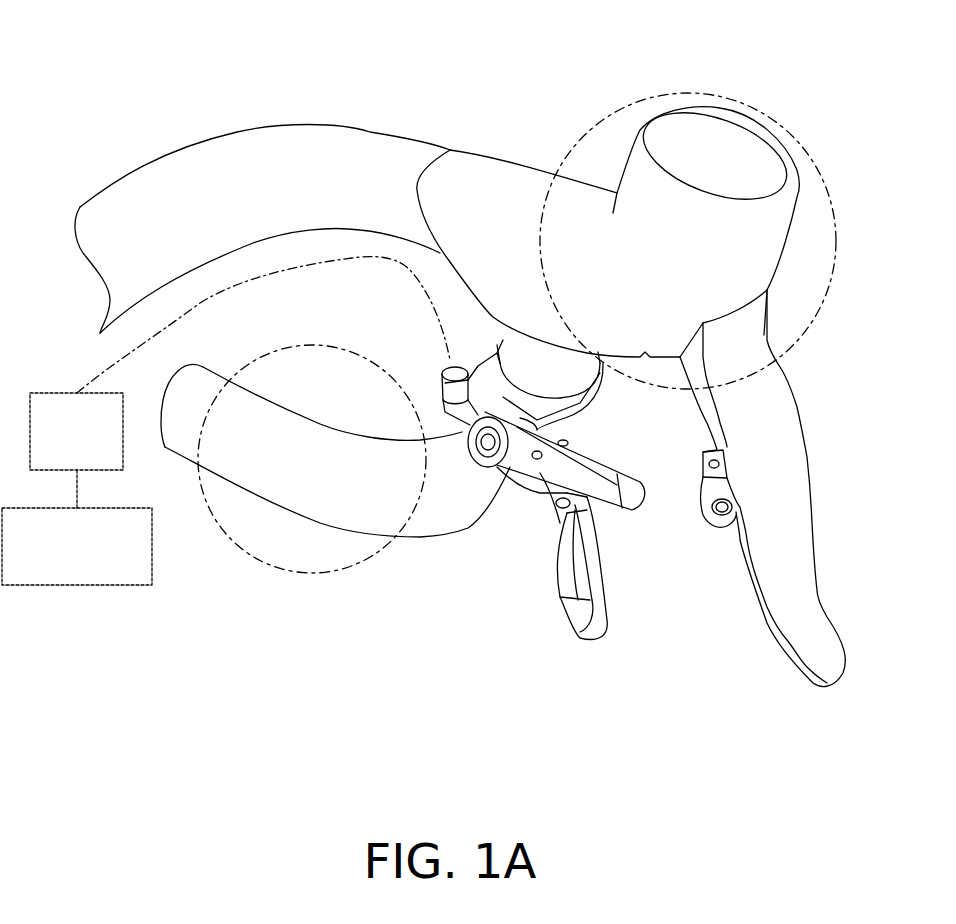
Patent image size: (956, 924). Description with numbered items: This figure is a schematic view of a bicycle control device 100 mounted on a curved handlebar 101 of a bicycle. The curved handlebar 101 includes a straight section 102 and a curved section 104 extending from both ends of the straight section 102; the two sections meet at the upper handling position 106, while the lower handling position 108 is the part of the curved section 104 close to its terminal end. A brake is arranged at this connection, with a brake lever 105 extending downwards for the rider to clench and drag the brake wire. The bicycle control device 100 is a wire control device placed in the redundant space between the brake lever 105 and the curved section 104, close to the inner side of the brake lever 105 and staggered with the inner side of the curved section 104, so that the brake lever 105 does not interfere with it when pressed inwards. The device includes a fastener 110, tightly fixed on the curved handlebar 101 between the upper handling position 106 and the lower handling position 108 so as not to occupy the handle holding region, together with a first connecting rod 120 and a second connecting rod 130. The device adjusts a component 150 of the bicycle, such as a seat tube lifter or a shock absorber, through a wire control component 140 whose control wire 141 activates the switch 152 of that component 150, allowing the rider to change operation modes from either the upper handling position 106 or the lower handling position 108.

The bicycle control device 100 is at (560, 666).
The curved handlebar 101 is at (87, 64).
The straight section 102 is at (140, 217).
The curved section 104 is at (292, 457).
The brake lever 105 is at (772, 467).
The upper handling position 106 is at (587, 133).
The lower handling position 108 is at (313, 574).
The fastener 110 is at (487, 383).
The first connecting rod 120 is at (525, 470).
The second connecting rod 130 is at (565, 525).
The wire control component 140 is at (358, 246).
The control wire 141 is at (398, 270).
The component 150 is at (98, 575).
The switch 152 is at (98, 460).